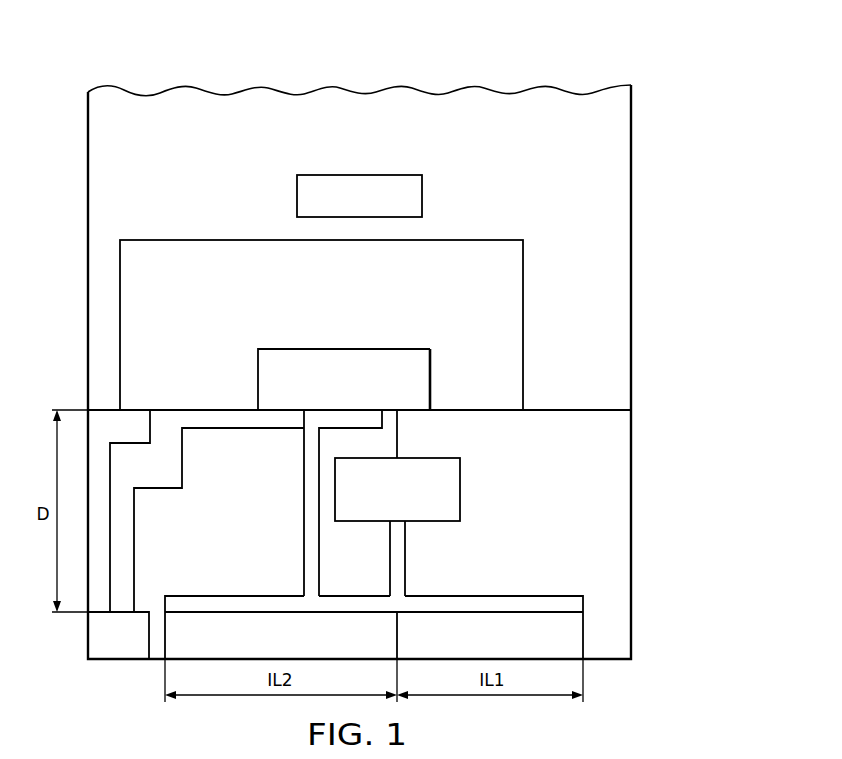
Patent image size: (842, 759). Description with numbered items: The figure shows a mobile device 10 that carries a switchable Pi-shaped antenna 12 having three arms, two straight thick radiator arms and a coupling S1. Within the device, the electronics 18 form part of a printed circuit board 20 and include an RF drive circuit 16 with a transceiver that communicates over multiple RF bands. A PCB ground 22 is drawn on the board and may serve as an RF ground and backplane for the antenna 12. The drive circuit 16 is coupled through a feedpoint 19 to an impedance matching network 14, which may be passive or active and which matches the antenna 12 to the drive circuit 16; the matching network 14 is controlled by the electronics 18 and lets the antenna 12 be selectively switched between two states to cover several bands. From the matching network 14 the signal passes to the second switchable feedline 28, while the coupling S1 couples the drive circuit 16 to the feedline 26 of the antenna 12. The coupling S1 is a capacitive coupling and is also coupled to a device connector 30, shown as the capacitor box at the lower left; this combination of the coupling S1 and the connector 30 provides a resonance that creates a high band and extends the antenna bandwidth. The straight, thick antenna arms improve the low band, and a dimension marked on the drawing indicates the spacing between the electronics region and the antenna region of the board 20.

The mobile device 10 is at (243, 59).
The switchable Pi-shaped antenna 12 is at (640, 513).
The impedance matching network 14 is at (461, 490).
The drive circuit 16 is at (431, 378).
The electronics 18 is at (524, 325).
The feedpoint 19 is at (400, 413).
The printed circuit board 20 is at (346, 148).
The PCB ground 22 is at (423, 195).
The feedline 26 is at (304, 500).
The second switchable feedline 28 is at (406, 560).
The device connector 30 is at (87, 633).
The coupling S1 is at (312, 409).